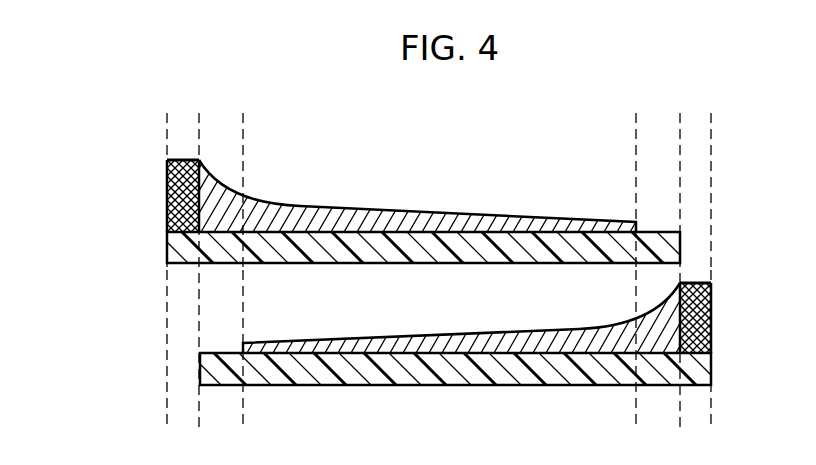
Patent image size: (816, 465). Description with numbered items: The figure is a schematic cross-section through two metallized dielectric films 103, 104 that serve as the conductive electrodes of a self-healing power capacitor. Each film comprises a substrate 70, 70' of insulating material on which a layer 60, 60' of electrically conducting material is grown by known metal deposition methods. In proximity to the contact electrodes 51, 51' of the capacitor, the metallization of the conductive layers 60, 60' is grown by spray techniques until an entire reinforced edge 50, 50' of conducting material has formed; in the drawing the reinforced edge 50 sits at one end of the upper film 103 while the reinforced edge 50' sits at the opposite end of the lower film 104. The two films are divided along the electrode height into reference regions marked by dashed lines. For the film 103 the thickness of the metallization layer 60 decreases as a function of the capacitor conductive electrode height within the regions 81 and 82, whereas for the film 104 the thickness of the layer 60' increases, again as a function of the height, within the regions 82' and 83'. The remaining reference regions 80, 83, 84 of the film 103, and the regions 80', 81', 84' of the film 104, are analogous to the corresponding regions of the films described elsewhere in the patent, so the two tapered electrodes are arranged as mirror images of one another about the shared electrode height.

The reference region 80 is at (157, 175).
The reference region 81 is at (255, 175).
The reference region 82 is at (407, 165).
The reference region 83 is at (630, 176).
The reference region 84 is at (722, 176).
The reinforced edge 50 is at (165, 144).
The contact electrode 51 is at (179, 196).
The layer of electrically conducting material 60 is at (417, 196).
The substrate 70 is at (443, 237).
The metallized dielectric film 103 is at (152, 238).
The reference region 80' is at (151, 348).
The reference region 81' is at (264, 348).
The reference region 82' is at (403, 307).
The reference region 83' is at (623, 348).
The reference region 84' is at (737, 335).
The reinforced edge 50' is at (725, 280).
The contact electrode 51' is at (693, 318).
The layer of electrically conducting material 60' is at (462, 318).
The substrate 70' is at (442, 385).
The metallized dielectric film 104 is at (730, 355).